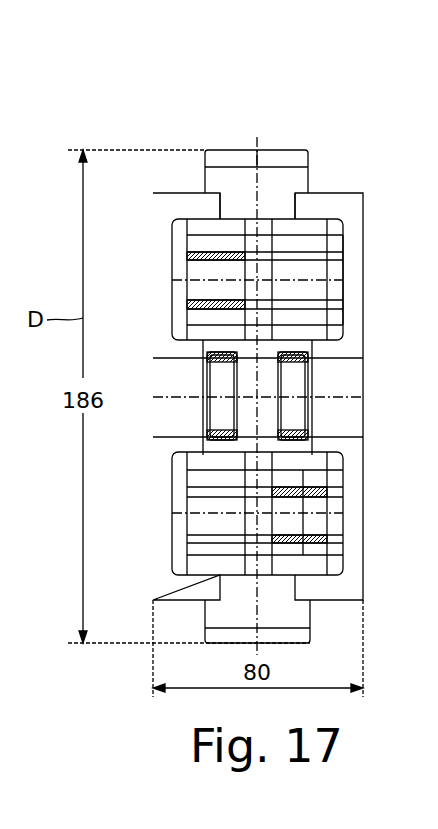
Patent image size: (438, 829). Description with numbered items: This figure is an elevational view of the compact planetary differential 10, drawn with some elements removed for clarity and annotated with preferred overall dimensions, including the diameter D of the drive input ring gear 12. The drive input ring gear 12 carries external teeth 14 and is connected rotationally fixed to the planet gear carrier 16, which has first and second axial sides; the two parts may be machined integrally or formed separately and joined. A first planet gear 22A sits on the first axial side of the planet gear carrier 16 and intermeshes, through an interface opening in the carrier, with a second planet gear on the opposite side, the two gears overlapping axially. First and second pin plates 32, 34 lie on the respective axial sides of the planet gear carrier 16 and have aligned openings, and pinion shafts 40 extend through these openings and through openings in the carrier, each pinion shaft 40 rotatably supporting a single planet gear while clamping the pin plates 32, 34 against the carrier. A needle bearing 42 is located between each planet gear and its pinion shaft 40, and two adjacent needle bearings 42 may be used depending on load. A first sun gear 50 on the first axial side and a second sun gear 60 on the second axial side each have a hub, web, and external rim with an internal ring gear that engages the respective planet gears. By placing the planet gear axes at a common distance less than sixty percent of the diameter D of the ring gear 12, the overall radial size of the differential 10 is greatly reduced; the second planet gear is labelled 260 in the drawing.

The compact planetary differential 10 is at (327, 123).
The drive input ring gear 12 is at (298, 178).
The external teeth 14 is at (276, 158).
The planet gear carrier 16 is at (239, 188).
The first planet gear 22A is at (207, 335).
The first pin plate 32 is at (182, 317).
The second pin plate 34 is at (360, 313).
The pinion shaft 40 is at (337, 268).
The needle bearing 42 is at (207, 263).
The first sun gear 50 is at (168, 193).
The second sun gear 60 is at (350, 207).
The roller body 260 is at (303, 480).